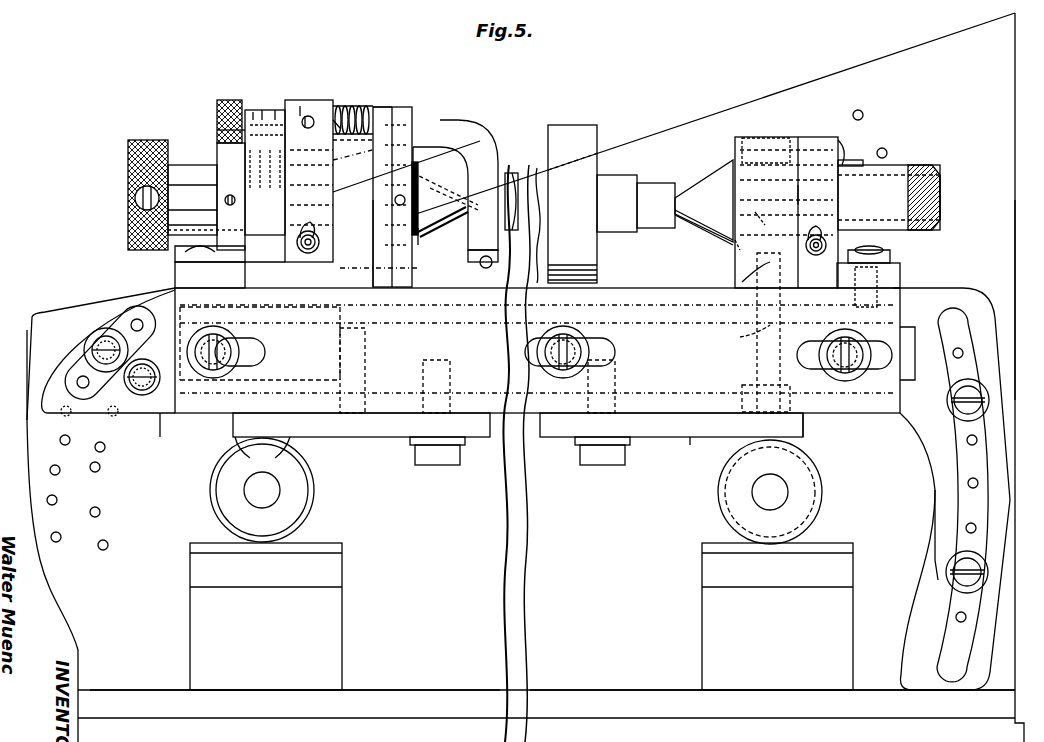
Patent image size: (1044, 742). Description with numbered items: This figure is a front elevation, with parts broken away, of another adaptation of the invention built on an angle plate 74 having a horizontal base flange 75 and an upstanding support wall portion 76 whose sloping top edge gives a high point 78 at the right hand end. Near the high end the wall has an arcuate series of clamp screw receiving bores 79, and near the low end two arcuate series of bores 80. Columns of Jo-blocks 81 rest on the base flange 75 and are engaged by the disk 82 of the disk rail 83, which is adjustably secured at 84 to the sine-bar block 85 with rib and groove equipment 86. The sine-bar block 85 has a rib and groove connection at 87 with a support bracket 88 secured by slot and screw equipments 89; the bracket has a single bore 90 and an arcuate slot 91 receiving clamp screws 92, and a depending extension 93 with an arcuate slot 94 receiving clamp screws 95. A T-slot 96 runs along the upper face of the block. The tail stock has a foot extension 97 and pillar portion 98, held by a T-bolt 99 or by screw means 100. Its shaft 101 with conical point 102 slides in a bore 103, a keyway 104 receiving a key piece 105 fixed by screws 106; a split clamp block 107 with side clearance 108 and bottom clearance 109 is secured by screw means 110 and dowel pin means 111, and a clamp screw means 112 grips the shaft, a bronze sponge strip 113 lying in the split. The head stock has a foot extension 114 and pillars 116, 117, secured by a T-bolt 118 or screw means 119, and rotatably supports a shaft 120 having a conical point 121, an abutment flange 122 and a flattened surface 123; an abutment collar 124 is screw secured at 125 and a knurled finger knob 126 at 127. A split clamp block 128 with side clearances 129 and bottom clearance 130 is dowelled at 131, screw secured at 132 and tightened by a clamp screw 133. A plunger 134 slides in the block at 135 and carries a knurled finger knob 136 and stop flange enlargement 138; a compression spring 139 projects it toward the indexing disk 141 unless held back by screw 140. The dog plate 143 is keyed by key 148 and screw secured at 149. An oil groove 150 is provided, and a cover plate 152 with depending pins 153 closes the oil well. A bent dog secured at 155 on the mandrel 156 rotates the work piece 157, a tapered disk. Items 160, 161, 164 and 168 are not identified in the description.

The angle plate 74 is at (26, 362).
The horizontal base flange 75 is at (380, 688).
The upstanding support wall portion 76 is at (820, 85).
The high point 78 is at (905, 50).
The clamp screw receiving bores 79 is at (858, 110).
The clamp screw receiving bores 80 is at (98, 452).
The Jo-blocks 81 is at (342, 592).
The disk 82 is at (313, 500).
The disk rail 83 is at (705, 425).
The securing means 84 is at (420, 425).
The sine-bar block 85 is at (232, 414).
The rib and groove equipment 86 is at (805, 418).
The rib and groove connection 87 is at (675, 305).
The support bracket 88 is at (165, 420).
The slot and screw equipments 89 is at (240, 352).
The single bore 90 is at (142, 395).
The arcuate slot 91 is at (120, 326).
The clamp screws 92 is at (92, 352).
The depending extension 93 is at (925, 508).
The arcuate slot 94 is at (938, 545).
The clamp screws 95 is at (946, 400).
The T-slot 96 is at (432, 330).
The foot extension 97 is at (895, 275).
The upstanding pillar portion 98 is at (748, 250).
The T-bolt 99 is at (868, 250).
The screw means 100 is at (735, 343).
The shaft 101 is at (942, 190).
The conical point 102 is at (715, 175).
The bore 103 is at (725, 240).
The keyway 104 is at (915, 168).
The key piece 105 is at (850, 160).
The screws 106 is at (776, 138).
The split clamp block 107 is at (840, 188).
The side clearance 108 is at (798, 190).
The bottom clearance 109 is at (822, 265).
The screw means 110 is at (842, 140).
The dowel pin means 111 is at (775, 219).
The clamp screw means 112 is at (805, 245).
The bronze sponge strip 113 is at (742, 285).
The foot extension 114 is at (180, 283).
The pillar 116 is at (245, 170).
The pillar 117 is at (430, 146).
The T-bolt 118 is at (232, 317).
The screw means 119 is at (345, 345).
The shaft 120 is at (175, 255).
The conical point 121 is at (430, 228).
The abutment flange 122 is at (439, 249).
The flattened surface 123 is at (175, 230).
The abutment collar 124 is at (222, 150).
The screw 125 is at (224, 199).
The knurled finger knob 126 is at (130, 185).
The screw 127 is at (130, 212).
The split clamp block 128 is at (330, 108).
The side clearances 129 is at (330, 188).
The bottom clearance 130 is at (280, 262).
The dowel 131 is at (375, 180).
The screws 132 is at (415, 100).
The clamp screw 133 is at (296, 242).
The plunger 134 is at (275, 110).
The plunger mounting 135 is at (350, 108).
The knurled finger knob 136 is at (218, 103).
The stop flange enlargement 138 is at (393, 110).
The compression spring 139 is at (383, 106).
The screw 140 is at (304, 108).
The indexing disk 141 is at (418, 120).
The dog plate 143 is at (420, 270).
The key 148 is at (405, 270).
The screw 149 is at (460, 178).
The oil groove 150 is at (235, 152).
The cover plate 152 is at (263, 110).
The depending pins 153 is at (316, 136).
The securing means 155 is at (485, 262).
The mandrel 156 is at (540, 205).
The work piece 157 is at (590, 135).
The bar 160 is at (192, 200).
The pin 161 is at (258, 112).
The plate 164 is at (505, 160).
The hook arm 168 is at (452, 120).